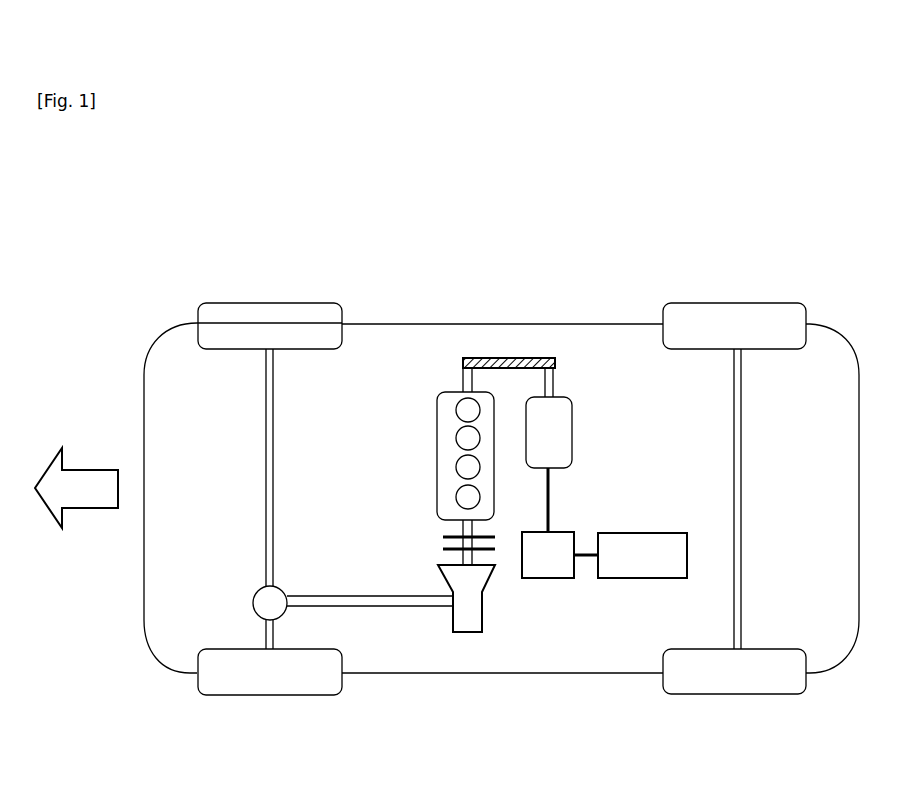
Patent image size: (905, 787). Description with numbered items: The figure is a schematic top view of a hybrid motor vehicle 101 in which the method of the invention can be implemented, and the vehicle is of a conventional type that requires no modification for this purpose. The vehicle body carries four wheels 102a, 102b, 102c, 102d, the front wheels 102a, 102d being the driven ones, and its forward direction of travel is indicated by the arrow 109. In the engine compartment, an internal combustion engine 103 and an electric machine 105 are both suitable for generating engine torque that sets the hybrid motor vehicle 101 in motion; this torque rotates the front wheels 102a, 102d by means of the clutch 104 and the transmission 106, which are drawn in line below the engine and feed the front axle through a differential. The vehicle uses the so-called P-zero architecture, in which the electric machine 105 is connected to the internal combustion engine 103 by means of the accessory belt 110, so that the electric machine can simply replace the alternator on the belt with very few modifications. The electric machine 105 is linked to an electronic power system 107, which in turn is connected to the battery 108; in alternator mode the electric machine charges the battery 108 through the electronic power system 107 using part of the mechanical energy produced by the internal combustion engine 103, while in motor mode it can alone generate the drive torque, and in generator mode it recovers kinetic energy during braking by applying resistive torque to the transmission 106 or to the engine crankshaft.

The hybrid motor vehicle 101 is at (182, 193).
The front wheel 102a is at (280, 303).
The wheel 102b is at (730, 303).
The wheel 102c is at (733, 694).
The front wheel 102d is at (268, 695).
The internal combustion engine 103 is at (440, 392).
The clutch 104 is at (443, 550).
The electric machine 105 is at (574, 430).
The transmission 106 is at (468, 632).
The electronic power system 107 is at (548, 578).
The battery 108 is at (643, 578).
The arrow 109 is at (76, 510).
The accessory belt 110 is at (515, 358).